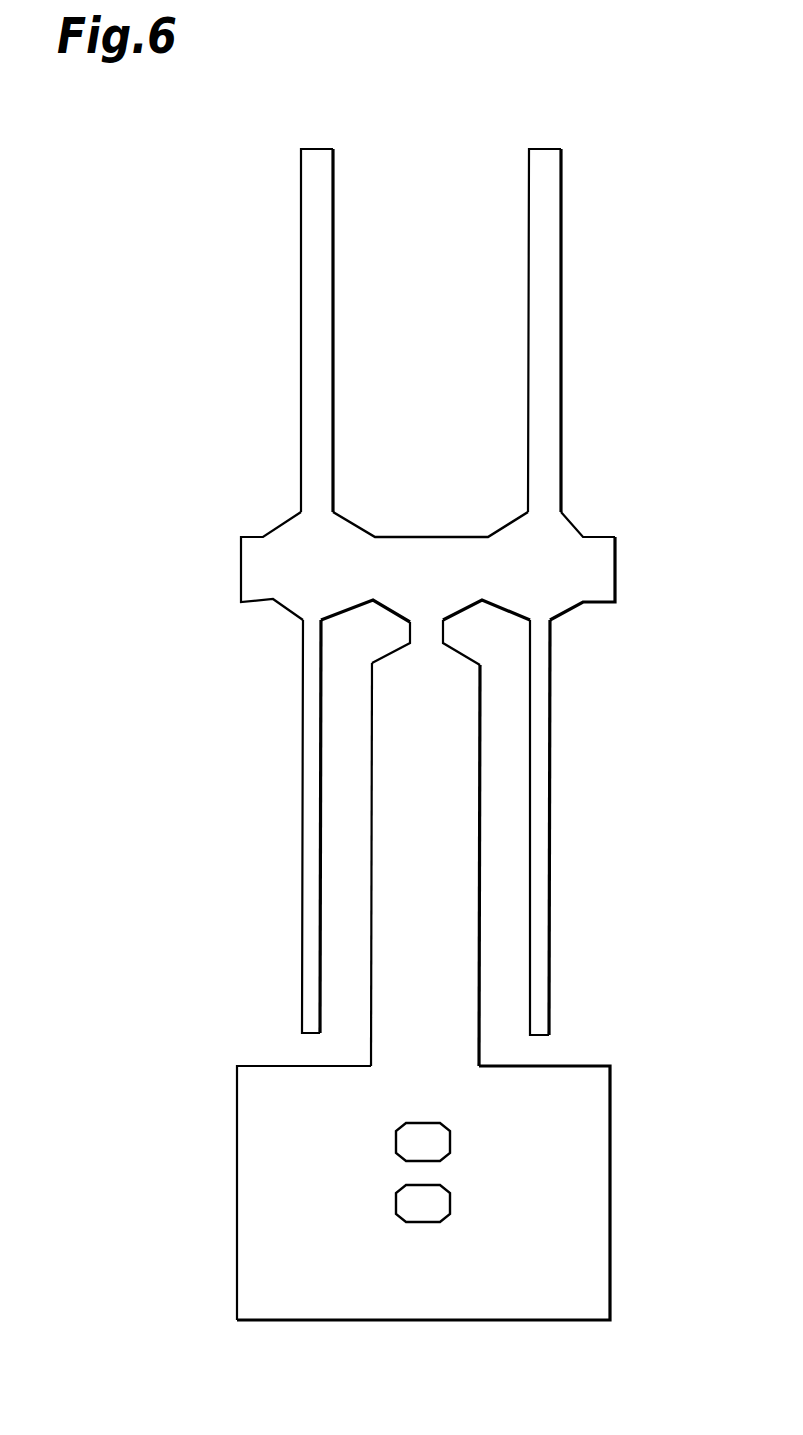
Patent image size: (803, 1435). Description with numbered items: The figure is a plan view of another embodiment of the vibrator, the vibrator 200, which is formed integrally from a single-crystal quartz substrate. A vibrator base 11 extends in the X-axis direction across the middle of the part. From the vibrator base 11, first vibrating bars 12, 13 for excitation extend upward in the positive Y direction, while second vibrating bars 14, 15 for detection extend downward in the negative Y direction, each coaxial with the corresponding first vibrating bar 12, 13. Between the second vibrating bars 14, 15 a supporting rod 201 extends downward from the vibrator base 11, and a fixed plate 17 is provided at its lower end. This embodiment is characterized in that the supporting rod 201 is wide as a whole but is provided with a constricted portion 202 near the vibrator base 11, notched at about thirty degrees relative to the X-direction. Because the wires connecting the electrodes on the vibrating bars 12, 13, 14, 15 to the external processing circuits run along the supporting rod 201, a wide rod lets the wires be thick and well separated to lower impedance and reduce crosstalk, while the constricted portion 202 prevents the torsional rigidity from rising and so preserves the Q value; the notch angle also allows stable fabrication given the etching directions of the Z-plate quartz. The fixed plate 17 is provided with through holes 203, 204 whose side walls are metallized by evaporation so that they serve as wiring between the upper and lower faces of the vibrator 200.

The vibrator 200 is at (677, 397).
The vibrator base 11 is at (578, 533).
The first vibrating bar 12 is at (301, 293).
The first vibrating bar 13 is at (561, 292).
The second vibrating bar 14 is at (305, 828).
The second vibrating bar 15 is at (546, 827).
The fixed plate 17 is at (611, 1197).
The supporting rod 201 is at (475, 752).
The constricted portion 202 is at (437, 638).
The through hole 203 is at (451, 1140).
The through hole 204 is at (451, 1203).